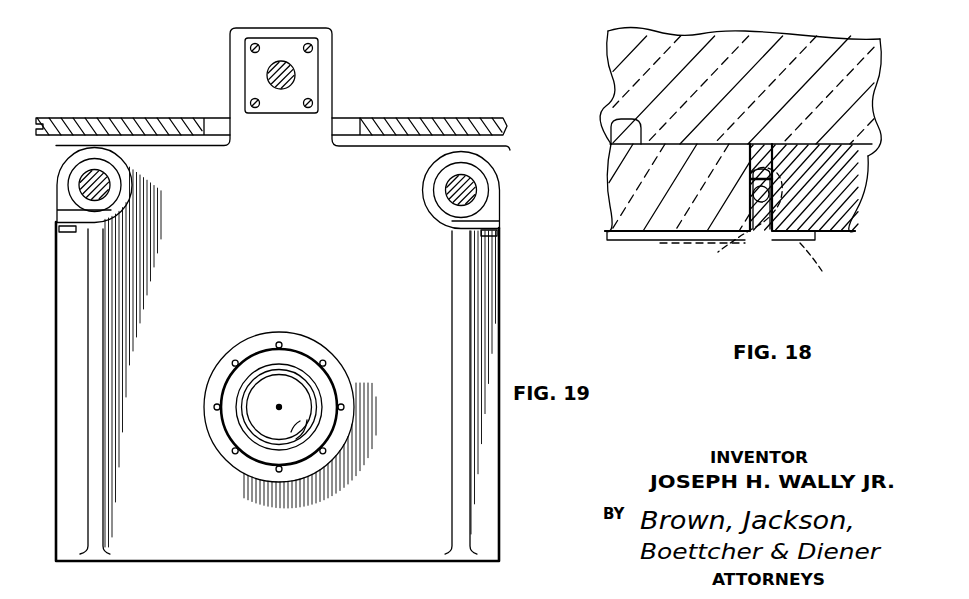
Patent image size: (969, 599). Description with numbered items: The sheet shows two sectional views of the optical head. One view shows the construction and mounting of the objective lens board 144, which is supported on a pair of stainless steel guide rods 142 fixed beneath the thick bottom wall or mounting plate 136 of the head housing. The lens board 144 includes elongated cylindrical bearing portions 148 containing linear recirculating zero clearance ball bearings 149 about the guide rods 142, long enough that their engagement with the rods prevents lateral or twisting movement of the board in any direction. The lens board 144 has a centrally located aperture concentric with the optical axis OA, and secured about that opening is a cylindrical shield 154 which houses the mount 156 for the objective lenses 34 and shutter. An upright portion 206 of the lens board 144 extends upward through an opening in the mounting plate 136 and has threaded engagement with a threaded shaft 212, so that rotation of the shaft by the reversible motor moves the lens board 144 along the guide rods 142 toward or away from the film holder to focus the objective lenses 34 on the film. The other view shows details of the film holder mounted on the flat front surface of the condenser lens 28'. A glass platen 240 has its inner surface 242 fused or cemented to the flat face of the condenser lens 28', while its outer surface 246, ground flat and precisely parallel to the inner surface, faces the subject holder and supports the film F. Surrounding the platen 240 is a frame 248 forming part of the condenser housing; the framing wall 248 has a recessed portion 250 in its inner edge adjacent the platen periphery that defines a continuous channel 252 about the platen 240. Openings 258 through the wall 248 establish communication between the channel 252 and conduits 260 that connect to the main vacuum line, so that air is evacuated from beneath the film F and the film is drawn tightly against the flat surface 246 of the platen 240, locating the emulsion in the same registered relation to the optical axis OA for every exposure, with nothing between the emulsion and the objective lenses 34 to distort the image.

In FIG. 19, the bottom wall or mounting plate 136 is at (102, 116).
In FIG. 19, the upright portion 206 is at (230, 46).
In FIG. 19, the threaded shaft 212 is at (290, 74).
In FIG. 19, the guide rods 142 is at (109, 178).
In FIG. 19, the cylindrical bearing portions 148 is at (127, 188).
In FIG. 19, the linear recirculating zero clearance ball bearings 149 is at (111, 200).
In FIG. 19, the lens board 144 is at (487, 512).
In FIG. 19, the cylindrical shield 154 is at (353, 420).
In FIG. 19, the mount 156 is at (246, 427).
In FIG. 19, the objective lenses 34 is at (306, 398).
In FIG. 19, the optical axis OA is at (279, 407).
In FIG. 18, the condenser lens 28' is at (711, 91).
In FIG. 18, the inner surface of platen 242 is at (608, 127).
In FIG. 18, the glass platen 240 is at (607, 194).
In FIG. 18, the outer surface of platen 246 is at (628, 236).
In FIG. 18, the frame or framing wall 248 is at (838, 203).
In FIG. 18, the channel 252 is at (808, 238).
In FIG. 18, the openings 258 is at (718, 243).
In FIG. 18, the recessed portion 250 is at (765, 233).
In FIG. 18, the conduits 260 is at (719, 258).
In FIG. 18, the film F is at (817, 268).